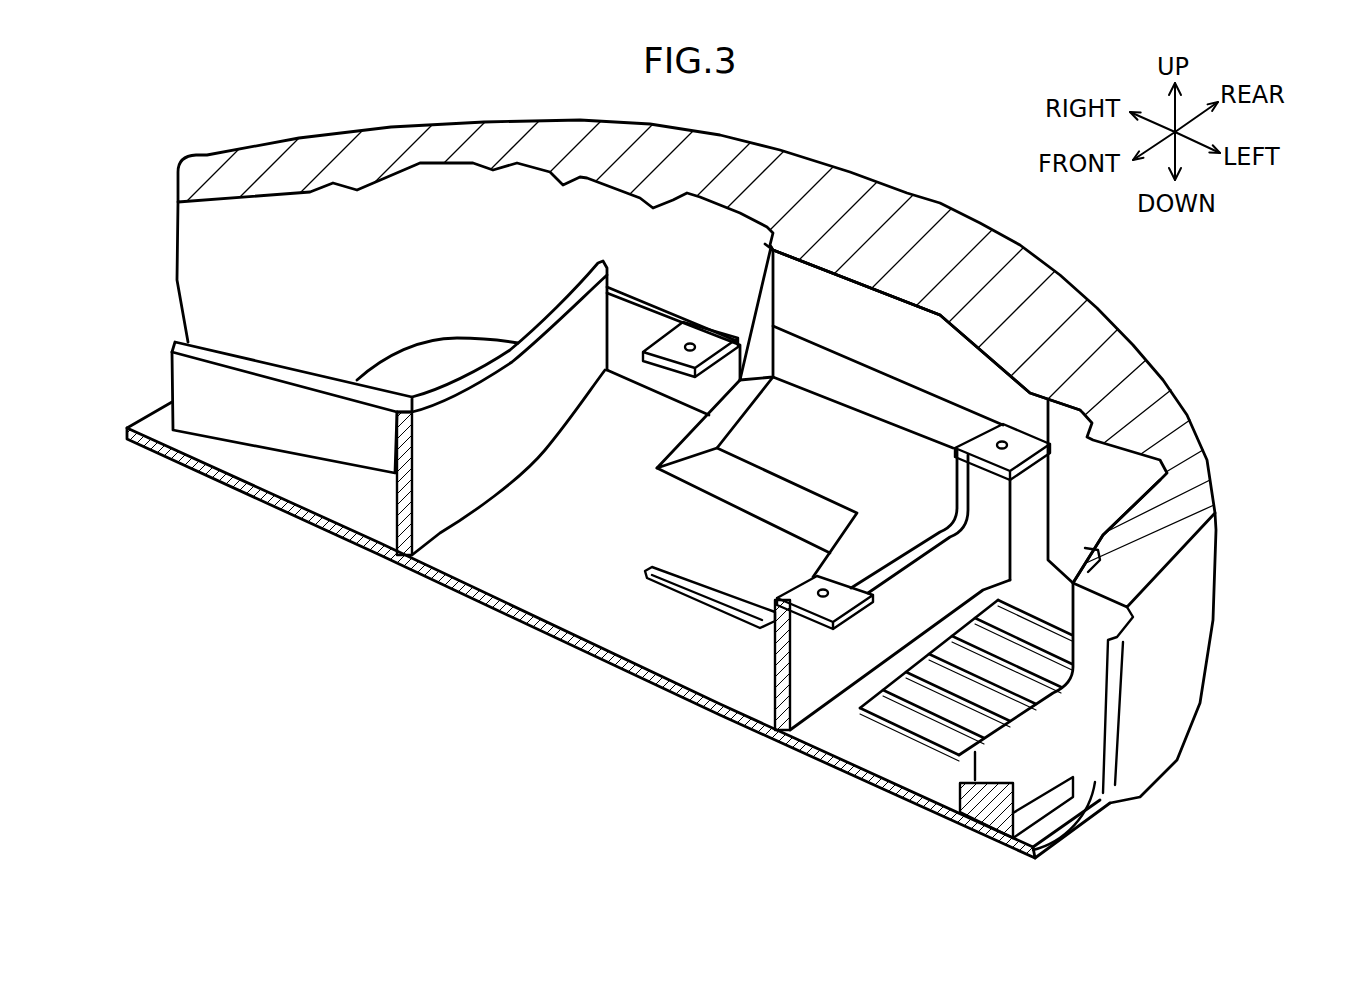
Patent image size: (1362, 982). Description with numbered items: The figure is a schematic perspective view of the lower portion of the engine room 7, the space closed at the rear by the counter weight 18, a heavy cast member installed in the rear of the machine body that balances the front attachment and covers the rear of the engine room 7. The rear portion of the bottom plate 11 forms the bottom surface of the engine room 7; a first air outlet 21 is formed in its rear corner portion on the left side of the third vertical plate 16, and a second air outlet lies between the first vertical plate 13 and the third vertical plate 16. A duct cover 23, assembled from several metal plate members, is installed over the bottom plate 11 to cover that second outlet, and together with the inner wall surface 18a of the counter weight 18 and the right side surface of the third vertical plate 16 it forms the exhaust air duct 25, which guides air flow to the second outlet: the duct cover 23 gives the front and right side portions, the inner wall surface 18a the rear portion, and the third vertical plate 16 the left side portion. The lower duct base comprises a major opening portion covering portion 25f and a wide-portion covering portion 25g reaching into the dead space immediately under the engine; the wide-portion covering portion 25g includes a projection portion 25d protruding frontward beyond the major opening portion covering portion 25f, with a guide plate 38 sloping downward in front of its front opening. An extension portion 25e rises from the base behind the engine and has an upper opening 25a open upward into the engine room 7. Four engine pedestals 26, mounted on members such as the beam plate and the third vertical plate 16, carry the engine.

The engine room 7 is at (445, 250).
The bottom plate 11 is at (538, 625).
The first vertical plate 13 is at (430, 520).
The third vertical plate 16 is at (807, 690).
The counter weight 18 is at (1052, 262).
The inner wall surface 18a is at (940, 353).
The first air outlet 21 is at (915, 727).
The duct cover 23 is at (727, 485).
The exhaust air duct 25 is at (776, 426).
The upper opening 25a is at (887, 313).
The projection portion 25d is at (887, 542).
The extension portion 25e is at (837, 383).
The major opening portion covering portion 25f is at (810, 473).
The wide-portion covering portion 25g is at (965, 502).
The engine pedestal 26 is at (647, 357).
The guide plate 38 is at (700, 600).